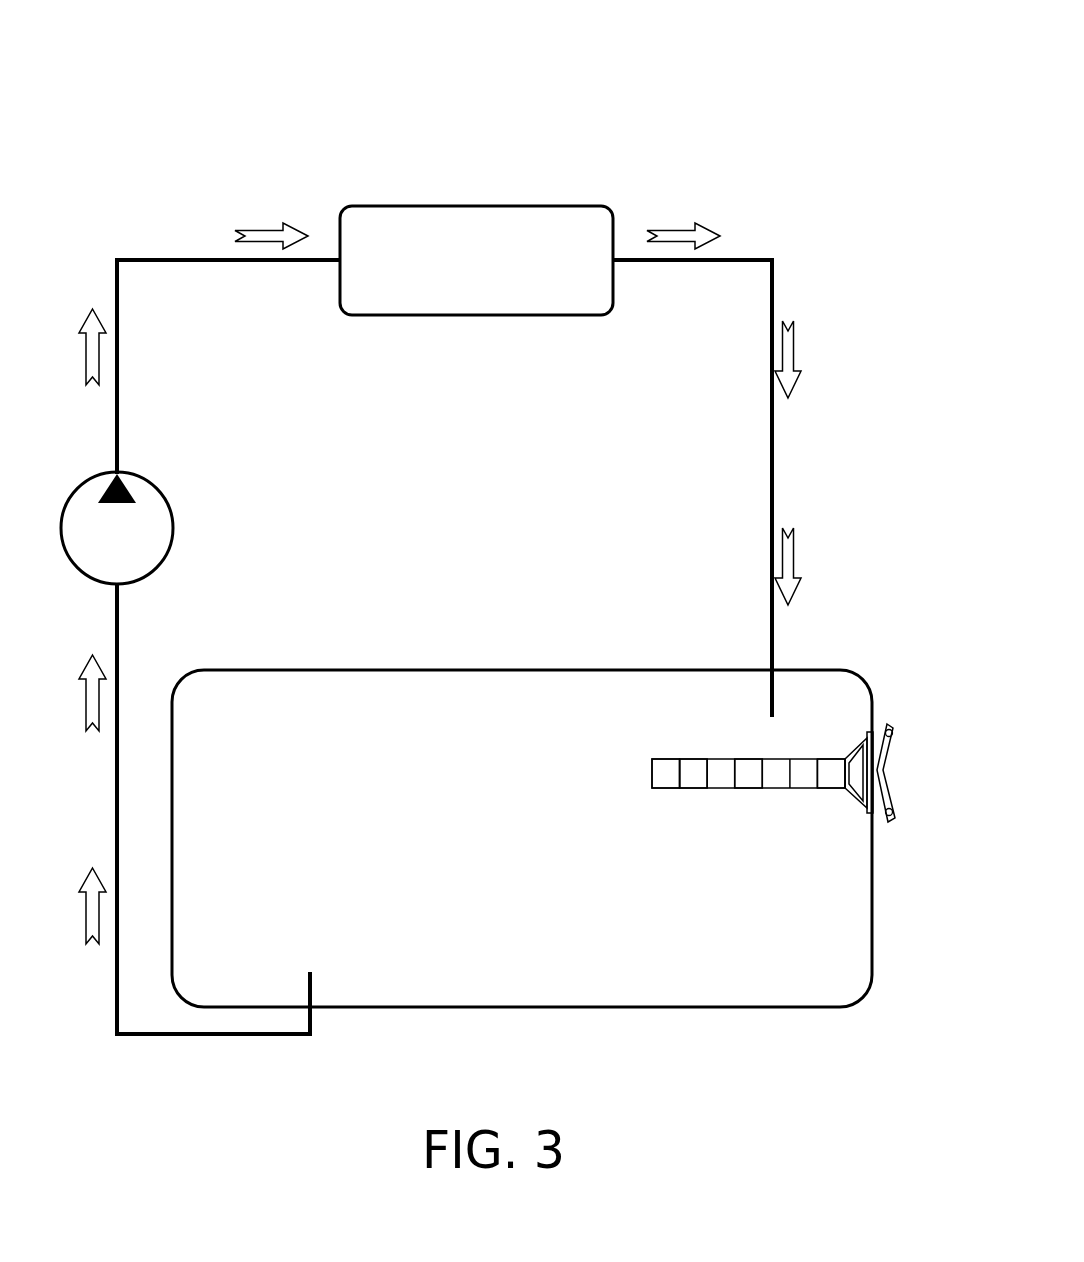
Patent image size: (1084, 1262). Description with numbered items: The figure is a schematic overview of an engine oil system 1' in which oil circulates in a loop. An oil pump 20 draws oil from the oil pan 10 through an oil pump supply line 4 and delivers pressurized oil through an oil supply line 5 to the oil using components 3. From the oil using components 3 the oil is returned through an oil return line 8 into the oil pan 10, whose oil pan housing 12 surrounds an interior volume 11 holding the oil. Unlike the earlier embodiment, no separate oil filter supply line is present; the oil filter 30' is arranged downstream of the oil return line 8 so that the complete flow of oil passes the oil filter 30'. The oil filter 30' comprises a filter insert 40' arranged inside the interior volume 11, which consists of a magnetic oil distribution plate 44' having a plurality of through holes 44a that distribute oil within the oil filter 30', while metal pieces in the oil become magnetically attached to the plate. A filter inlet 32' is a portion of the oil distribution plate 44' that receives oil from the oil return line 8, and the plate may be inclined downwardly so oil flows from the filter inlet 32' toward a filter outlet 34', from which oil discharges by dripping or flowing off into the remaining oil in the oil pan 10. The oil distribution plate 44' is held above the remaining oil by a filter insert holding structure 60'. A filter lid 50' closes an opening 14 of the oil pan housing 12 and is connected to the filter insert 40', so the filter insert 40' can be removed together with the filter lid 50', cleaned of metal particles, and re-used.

The engine oil system 1' is at (446, 523).
The oil using components 3 is at (482, 206).
The oil supply line 5 is at (115, 277).
The oil return line 8 is at (774, 463).
The oil pump 20 is at (84, 484).
The oil pump supply line 4 is at (115, 780).
The oil pan 10 is at (411, 637).
The interior volume 11 is at (478, 825).
The oil pan housing 12 is at (503, 669).
The oil filter 30' is at (693, 695).
The oil distribution plate 44' is at (633, 695).
The filter inlet 32' is at (713, 695).
The filter outlet 34' is at (669, 834).
The filter insert 40' is at (719, 756).
The through holes 44a is at (811, 746).
The filter insert holding structure 60' is at (823, 823).
The opening 14 is at (890, 708).
The filter lid 50' is at (918, 826).